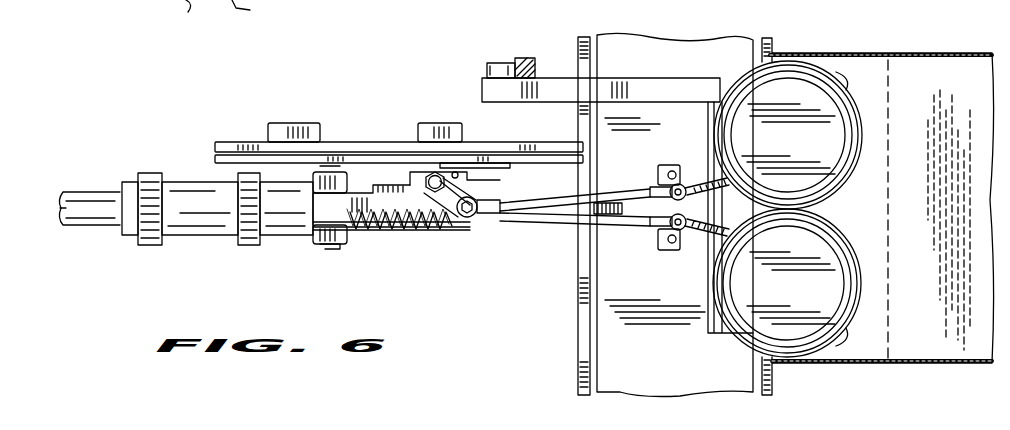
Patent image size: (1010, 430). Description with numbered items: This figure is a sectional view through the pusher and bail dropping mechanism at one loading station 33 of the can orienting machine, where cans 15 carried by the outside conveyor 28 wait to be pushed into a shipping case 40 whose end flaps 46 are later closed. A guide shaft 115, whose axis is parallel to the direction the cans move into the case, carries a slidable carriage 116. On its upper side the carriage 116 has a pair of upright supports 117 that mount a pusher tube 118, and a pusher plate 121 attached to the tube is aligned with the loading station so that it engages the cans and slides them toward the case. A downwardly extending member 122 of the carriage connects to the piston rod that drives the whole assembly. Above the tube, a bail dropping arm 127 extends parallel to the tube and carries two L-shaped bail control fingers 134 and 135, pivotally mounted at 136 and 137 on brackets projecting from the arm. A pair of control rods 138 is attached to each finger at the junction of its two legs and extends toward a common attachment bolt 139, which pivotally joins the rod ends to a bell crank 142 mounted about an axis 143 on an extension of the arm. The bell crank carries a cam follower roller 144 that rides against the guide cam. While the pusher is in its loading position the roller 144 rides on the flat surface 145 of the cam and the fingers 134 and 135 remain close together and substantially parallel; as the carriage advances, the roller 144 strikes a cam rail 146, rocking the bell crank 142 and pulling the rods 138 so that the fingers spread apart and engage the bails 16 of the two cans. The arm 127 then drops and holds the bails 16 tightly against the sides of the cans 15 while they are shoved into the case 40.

The cans 15 is at (803, 150).
The bails 16 is at (838, 72).
The outside conveyor 28 is at (672, 40).
The loading station 33 is at (562, 311).
The shipping case 40 is at (950, 52).
The flaps 46 is at (790, 56).
The guide shaft 115 is at (86, 200).
The slidable carriage 116 is at (258, 12).
The upright supports 117 is at (153, 238).
The pusher tube 118 is at (277, 233).
The pusher plate 121 is at (720, 336).
The downwardly extending member 122 is at (164, 9).
The bail dropping arm 127 is at (325, 208).
The bail control finger 134 is at (697, 250).
The bail control finger 135 is at (700, 180).
The pivotal axis 136 is at (660, 250).
The pivotal axis 137 is at (673, 168).
The control rods 138 is at (572, 222).
The attachment bolt 139 is at (473, 217).
The bell crank 142 is at (447, 198).
The pivotal axis 143 is at (452, 170).
The cam follower roller 144 is at (422, 170).
The flat surface 145 is at (225, 168).
The cam rail 146 is at (497, 165).